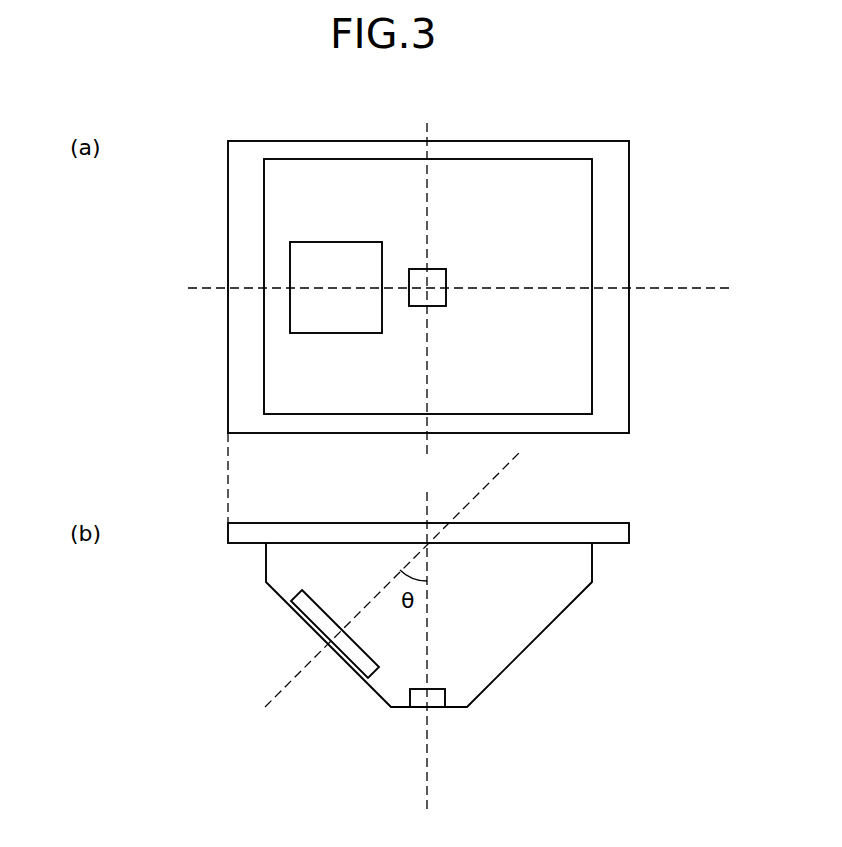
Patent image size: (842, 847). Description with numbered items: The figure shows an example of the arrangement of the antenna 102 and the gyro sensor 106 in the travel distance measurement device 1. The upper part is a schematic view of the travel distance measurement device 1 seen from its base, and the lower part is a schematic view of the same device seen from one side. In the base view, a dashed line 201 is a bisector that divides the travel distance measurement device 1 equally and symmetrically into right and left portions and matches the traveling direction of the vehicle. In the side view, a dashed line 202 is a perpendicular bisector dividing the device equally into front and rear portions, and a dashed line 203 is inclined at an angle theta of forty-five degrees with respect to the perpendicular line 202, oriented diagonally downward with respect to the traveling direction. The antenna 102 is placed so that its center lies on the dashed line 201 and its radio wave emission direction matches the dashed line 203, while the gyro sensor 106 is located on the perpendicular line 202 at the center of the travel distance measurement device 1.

The travel distance measurement device 1 is at (264, 228).
The antenna 102 is at (341, 246).
The gyro sensor 106 is at (446, 297).
The dashed line 201 is at (208, 291).
The dashed line 202 is at (429, 790).
The dashed line 203 is at (298, 673).